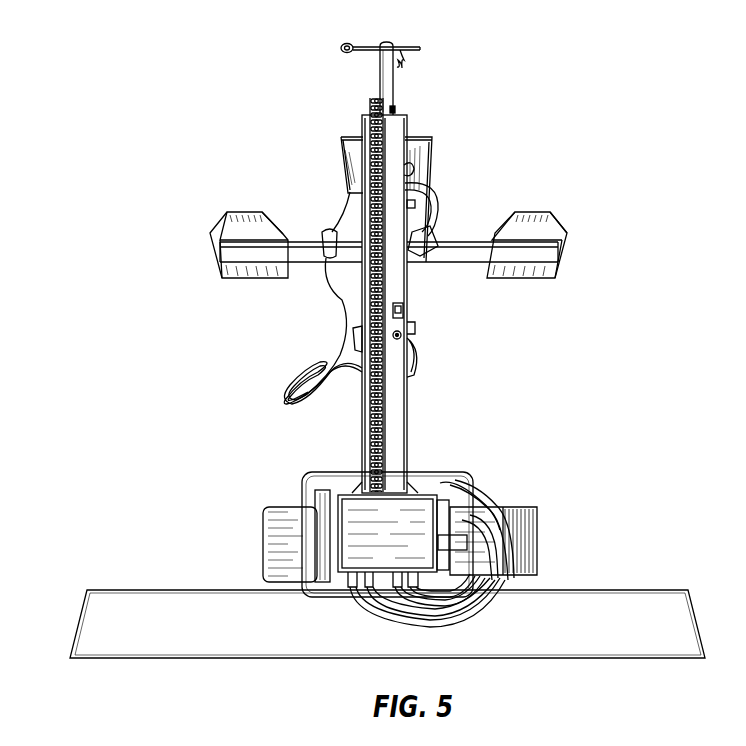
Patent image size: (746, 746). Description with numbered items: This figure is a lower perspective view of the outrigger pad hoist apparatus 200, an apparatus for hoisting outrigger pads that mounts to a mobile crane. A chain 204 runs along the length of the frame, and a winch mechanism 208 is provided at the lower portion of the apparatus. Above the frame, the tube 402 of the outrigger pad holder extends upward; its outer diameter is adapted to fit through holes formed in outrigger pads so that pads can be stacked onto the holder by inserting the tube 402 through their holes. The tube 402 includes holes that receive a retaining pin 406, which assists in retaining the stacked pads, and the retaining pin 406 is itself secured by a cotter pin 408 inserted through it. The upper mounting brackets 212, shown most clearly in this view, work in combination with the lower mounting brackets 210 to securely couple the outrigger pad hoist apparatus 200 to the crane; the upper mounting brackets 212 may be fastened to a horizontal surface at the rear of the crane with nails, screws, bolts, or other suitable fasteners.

The outrigger pad hoist apparatus 200 is at (564, 110).
The chain 204 is at (372, 418).
The winch mechanism 208 is at (442, 484).
The lower mounting brackets 210 is at (545, 275).
The upper mounting brackets 212 is at (638, 607).
The tube 402 is at (392, 84).
The retaining pin 406 is at (344, 46).
The cotter pin 408 is at (408, 48).